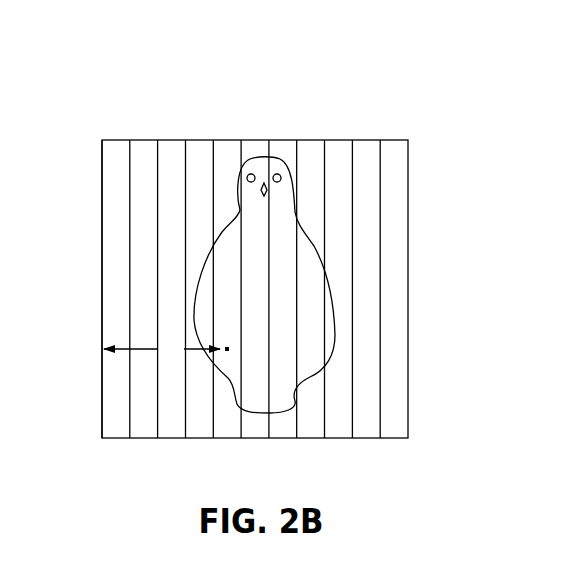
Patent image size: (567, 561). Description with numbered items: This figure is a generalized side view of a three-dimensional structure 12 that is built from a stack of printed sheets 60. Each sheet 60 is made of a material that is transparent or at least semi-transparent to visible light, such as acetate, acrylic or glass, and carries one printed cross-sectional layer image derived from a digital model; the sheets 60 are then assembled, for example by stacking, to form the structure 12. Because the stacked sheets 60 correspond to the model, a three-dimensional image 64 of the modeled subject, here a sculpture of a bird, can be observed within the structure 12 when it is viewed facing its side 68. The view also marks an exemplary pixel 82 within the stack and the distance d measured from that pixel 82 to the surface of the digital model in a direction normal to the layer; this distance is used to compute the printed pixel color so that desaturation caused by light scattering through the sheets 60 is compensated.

The three-dimensional structure 12 is at (483, 101).
The sheets 60 is at (112, 140).
The side of structure 68 is at (100, 224).
The 3D image 64 is at (200, 283).
The pixel 82 is at (228, 351).